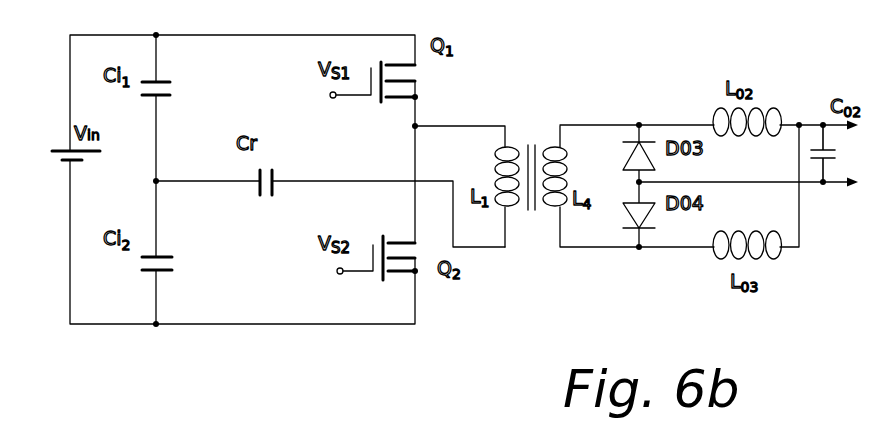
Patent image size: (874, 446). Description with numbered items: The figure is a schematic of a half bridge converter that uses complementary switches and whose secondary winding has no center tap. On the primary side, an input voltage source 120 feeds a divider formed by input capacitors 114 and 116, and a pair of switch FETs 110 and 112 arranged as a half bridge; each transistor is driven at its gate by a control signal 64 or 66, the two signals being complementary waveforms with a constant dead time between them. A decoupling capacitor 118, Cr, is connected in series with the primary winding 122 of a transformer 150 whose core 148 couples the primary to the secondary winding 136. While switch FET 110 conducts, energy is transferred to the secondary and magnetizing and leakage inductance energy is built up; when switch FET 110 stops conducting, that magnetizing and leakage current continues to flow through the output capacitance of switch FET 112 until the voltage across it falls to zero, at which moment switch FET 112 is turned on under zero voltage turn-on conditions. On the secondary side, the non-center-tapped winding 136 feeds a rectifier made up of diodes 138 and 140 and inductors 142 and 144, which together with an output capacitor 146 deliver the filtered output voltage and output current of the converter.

The input capacitor Ci1 114 is at (196, 82).
The input capacitor Ci2 116 is at (165, 253).
The decoupling capacitor 118 is at (316, 148).
The input voltage source Vin 120 is at (78, 159).
The switch FET 110 is at (420, 76).
The switch FET 112 is at (421, 264).
The gate drive signal VS1 64 is at (340, 106).
The gate drive signal VS2 66 is at (345, 285).
The transformer primary winding L1 122 is at (492, 165).
The secondary winding 136 is at (562, 150).
The transformer core 148 is at (528, 139).
The transformer 150 is at (548, 127).
The diode 138 is at (656, 162).
The diode 140 is at (650, 224).
The inductor 142 is at (772, 107).
The inductor 144 is at (738, 228).
The output capacitor C02 146 is at (836, 160).